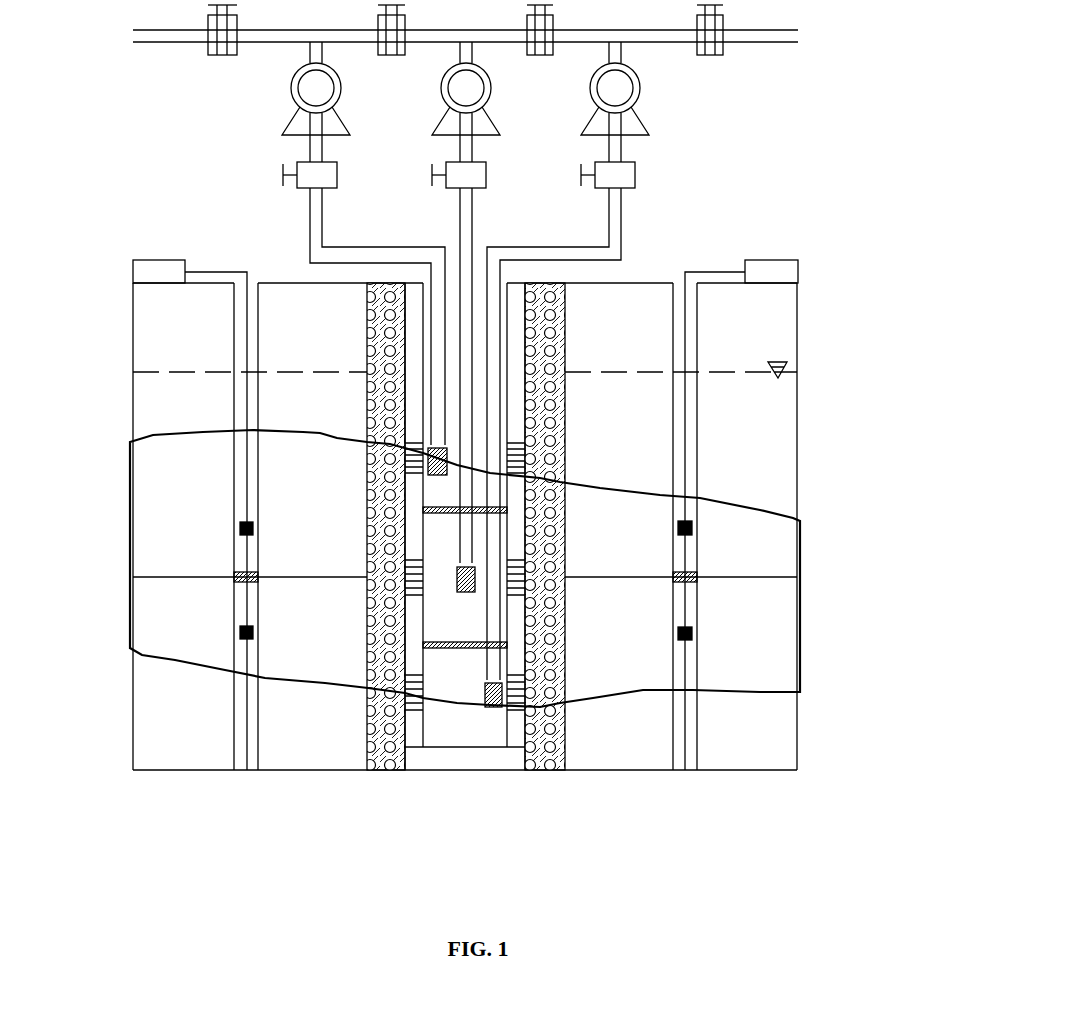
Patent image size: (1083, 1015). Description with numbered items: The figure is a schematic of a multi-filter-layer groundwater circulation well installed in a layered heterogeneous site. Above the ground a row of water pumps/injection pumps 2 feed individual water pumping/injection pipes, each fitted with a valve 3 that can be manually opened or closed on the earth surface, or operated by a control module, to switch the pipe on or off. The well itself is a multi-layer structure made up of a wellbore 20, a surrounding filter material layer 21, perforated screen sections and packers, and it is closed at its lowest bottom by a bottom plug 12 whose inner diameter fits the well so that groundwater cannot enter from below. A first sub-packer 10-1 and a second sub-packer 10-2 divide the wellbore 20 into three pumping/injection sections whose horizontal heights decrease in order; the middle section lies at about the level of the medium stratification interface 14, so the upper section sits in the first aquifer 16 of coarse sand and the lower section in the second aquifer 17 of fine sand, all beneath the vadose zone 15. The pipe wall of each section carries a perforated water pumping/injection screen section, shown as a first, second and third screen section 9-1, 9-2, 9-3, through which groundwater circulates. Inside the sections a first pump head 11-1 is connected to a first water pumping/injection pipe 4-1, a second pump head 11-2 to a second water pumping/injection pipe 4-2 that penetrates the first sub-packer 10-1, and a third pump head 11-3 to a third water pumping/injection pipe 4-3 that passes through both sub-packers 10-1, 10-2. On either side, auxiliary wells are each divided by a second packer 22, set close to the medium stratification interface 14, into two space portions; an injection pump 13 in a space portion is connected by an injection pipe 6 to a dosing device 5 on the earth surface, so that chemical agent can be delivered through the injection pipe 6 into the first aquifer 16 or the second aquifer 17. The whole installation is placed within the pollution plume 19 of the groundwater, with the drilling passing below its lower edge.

The water pump/injection pump 2 is at (290, 95).
The valve 3 is at (283, 168).
The first water pumping/injection pipe 4-1 is at (308, 212).
The second water pumping/injection pipe 4-2 is at (457, 212).
The third water pumping/injection pipe 4-3 is at (607, 212).
The dosing device 5 is at (160, 262).
The injection pipe 6 is at (228, 270).
The first water pumping/injection screen section 9-1 is at (560, 470).
The second water pumping/injection screen section 9-2 is at (562, 593).
The third water pumping/injection screen section 9-3 is at (565, 703).
The first sub-packer 10-1 is at (423, 514).
The second sub-packer 10-2 is at (423, 650).
The first pump head 11-1 is at (429, 477).
The second pump head 11-2 is at (457, 593).
The third pump head 11-3 is at (485, 708).
The bottom plug 12 is at (458, 760).
The injection pump 13 is at (238, 527).
The medium stratification interface 14 is at (730, 578).
The vadose zone 15 is at (725, 330).
The first aquifer 16 is at (723, 481).
The second aquifer 17 is at (725, 733).
The pollution plume 19 is at (187, 483).
The wellbore 20 is at (517, 307).
The filter material layer 21 is at (565, 412).
The second packer 22 is at (235, 582).